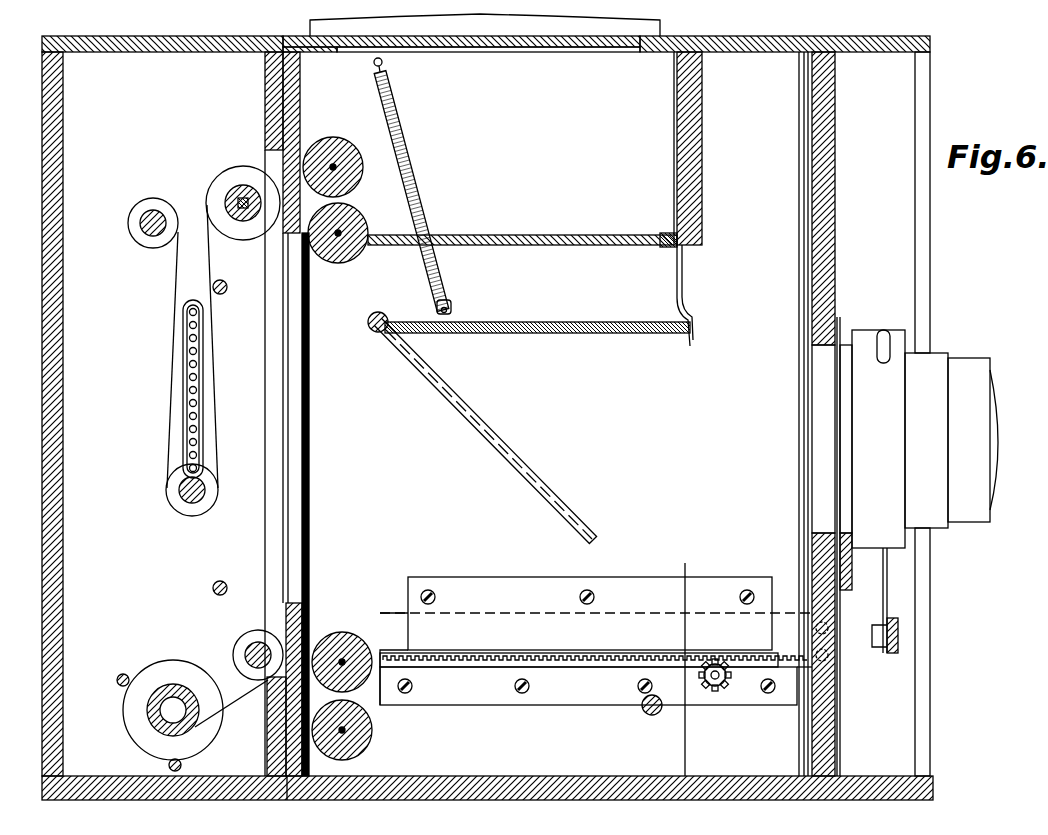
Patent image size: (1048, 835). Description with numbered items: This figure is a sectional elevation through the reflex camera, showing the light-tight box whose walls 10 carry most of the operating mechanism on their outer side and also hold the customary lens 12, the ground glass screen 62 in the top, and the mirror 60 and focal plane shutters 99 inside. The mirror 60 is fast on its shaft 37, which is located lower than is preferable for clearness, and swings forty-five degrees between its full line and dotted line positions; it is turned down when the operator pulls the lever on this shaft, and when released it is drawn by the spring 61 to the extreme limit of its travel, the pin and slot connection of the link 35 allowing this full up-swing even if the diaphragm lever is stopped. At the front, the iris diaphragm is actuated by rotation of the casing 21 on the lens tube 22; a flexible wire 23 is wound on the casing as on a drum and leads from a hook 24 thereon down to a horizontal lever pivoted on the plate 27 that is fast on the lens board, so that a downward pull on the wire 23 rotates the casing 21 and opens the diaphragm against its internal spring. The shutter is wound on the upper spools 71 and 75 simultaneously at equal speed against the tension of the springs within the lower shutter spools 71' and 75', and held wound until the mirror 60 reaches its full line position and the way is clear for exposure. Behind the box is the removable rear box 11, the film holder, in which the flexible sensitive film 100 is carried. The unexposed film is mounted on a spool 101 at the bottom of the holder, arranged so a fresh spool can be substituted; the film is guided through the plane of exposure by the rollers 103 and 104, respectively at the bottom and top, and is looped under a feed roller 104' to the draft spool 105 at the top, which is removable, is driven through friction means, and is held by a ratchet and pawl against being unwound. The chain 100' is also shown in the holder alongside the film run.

The box walls 10 is at (820, 135).
The removable rear box 11 is at (63, 553).
The lens 12 is at (972, 512).
The casing 21 is at (875, 407).
The lens tube 22 is at (926, 440).
The flexible wire 23 is at (888, 592).
The hook 24 is at (883, 330).
The plate 27 is at (850, 591).
The link 35 is at (890, 656).
The shaft 37 is at (378, 312).
The mirror 60 is at (543, 321).
The spring 61 is at (412, 156).
The ground glass screen 62 is at (547, 49).
The shutter spool 71 is at (354, 226).
The lower shutter spool 71' is at (342, 641).
The shutter spool 75 is at (337, 152).
The lower shutter spool 75' is at (364, 737).
The focal plane shutters 99 is at (309, 389).
The flexible sensitive film 100 is at (226, 346).
The chain 100' is at (155, 389).
The spool 101 is at (173, 684).
The roller 103 is at (254, 643).
The roller 104 is at (243, 249).
The feed roller 104' is at (160, 498).
The draft spool 105 is at (128, 229).